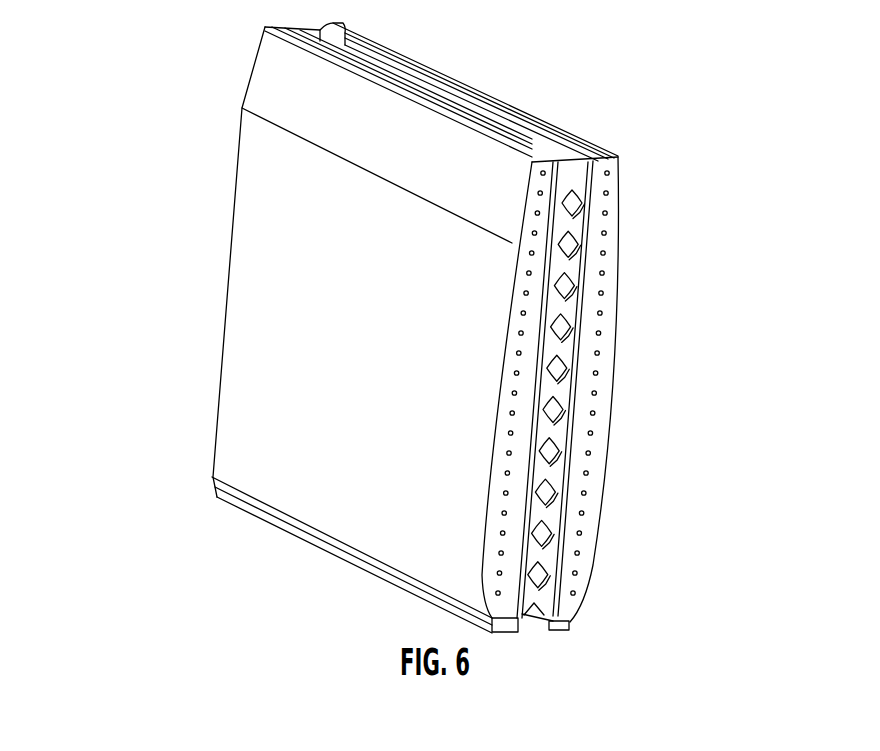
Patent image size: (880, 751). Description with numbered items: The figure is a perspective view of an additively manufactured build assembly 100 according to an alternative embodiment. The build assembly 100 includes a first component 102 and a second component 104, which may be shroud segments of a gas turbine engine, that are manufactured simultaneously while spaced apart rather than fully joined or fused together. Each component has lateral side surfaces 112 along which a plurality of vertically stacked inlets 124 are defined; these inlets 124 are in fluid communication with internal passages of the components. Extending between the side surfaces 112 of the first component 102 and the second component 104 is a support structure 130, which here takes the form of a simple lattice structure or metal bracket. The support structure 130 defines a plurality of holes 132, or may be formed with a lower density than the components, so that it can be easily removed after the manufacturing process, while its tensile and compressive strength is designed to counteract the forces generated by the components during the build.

The build assembly 100 is at (484, 320).
The first component 102 is at (477, 197).
The second component 104 is at (582, 346).
The lateral side surfaces 112 is at (510, 387).
The inlets 124 is at (607, 212).
The support structure 130 is at (630, 402).
The holes 132 is at (566, 332).